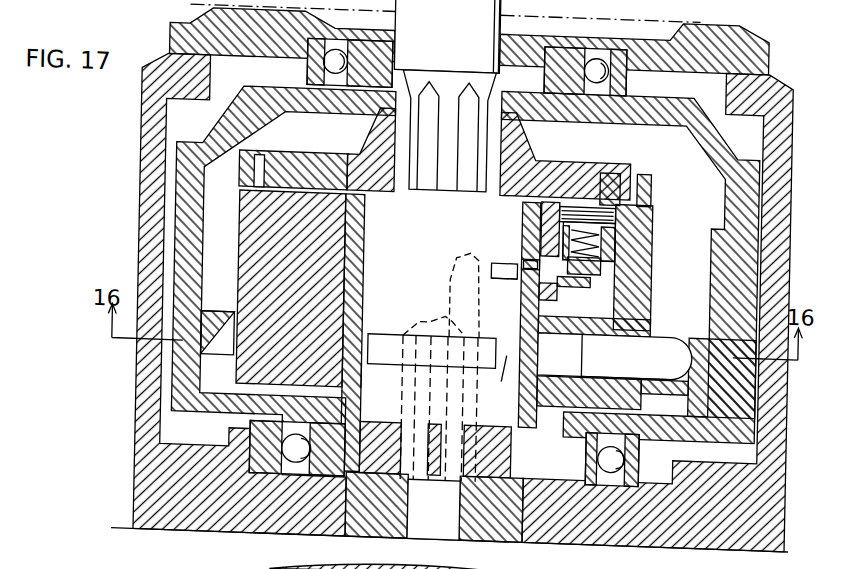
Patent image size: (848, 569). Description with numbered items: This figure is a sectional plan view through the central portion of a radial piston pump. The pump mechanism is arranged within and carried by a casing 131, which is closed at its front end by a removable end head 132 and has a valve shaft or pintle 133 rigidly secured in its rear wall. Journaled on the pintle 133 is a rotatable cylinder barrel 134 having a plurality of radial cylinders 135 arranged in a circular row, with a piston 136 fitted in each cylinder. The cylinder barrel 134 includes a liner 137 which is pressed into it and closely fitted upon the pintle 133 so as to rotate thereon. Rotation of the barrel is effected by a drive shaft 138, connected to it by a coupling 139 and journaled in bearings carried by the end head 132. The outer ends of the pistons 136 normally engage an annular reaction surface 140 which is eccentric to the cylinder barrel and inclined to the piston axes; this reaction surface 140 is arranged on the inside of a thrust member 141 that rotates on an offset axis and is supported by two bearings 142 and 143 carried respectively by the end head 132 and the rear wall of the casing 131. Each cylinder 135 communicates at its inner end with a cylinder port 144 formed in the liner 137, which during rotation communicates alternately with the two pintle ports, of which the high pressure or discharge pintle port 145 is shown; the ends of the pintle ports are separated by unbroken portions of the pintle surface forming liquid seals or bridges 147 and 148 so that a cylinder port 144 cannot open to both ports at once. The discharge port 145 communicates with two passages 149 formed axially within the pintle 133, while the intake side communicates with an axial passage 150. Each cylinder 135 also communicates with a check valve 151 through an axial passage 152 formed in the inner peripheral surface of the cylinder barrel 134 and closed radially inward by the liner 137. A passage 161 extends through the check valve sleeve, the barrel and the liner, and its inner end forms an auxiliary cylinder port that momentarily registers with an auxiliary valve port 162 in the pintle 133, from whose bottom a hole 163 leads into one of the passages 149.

The casing 131 is at (146, 444).
The end head 132 is at (754, 45).
The pintle 133 is at (515, 531).
The cylinder barrel 134 is at (300, 309).
The cylinder 135 is at (580, 363).
The piston 136 is at (672, 354).
The liner 137 is at (362, 230).
The drive shaft 138 is at (446, 49).
The coupling 139 is at (345, 156).
The reaction surface 140 is at (703, 369).
The thrust member 141 is at (184, 257).
The bearing 142 is at (312, 77).
The bearing 143 is at (250, 438).
The cylinder port 144 is at (529, 353).
The pintle port 145 is at (381, 348).
The bridge 147 is at (366, 366).
The bridge 148 is at (508, 354).
The passage 149 is at (460, 468).
The passage 150 is at (453, 273).
The check valve 151 is at (616, 227).
The axial passage 152 is at (547, 311).
The passage 161 is at (535, 259).
The auxiliary valve port 162 is at (506, 275).
The hole 163 is at (482, 257).